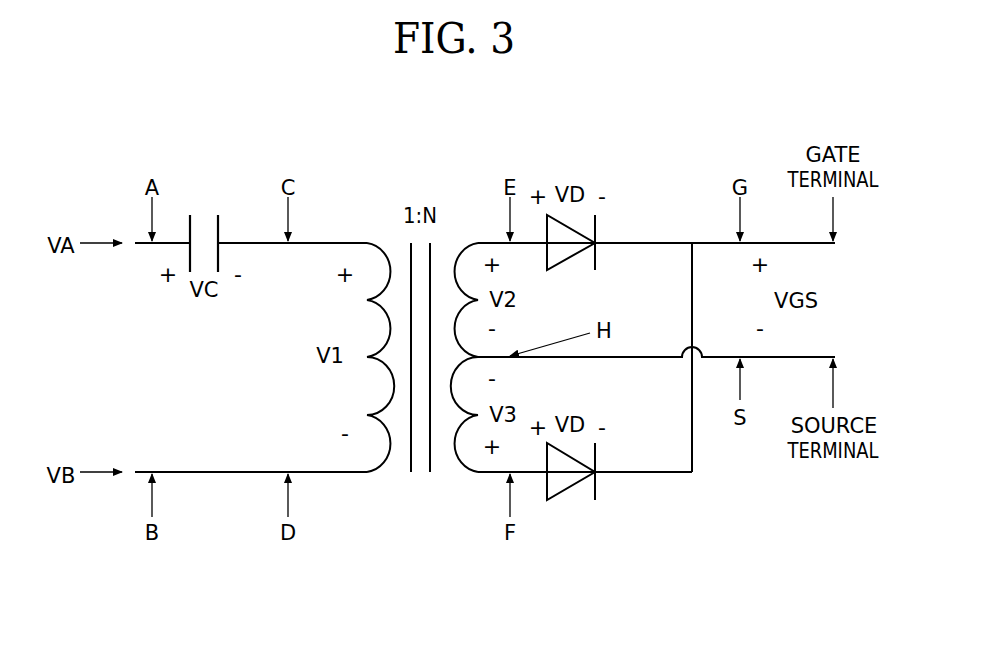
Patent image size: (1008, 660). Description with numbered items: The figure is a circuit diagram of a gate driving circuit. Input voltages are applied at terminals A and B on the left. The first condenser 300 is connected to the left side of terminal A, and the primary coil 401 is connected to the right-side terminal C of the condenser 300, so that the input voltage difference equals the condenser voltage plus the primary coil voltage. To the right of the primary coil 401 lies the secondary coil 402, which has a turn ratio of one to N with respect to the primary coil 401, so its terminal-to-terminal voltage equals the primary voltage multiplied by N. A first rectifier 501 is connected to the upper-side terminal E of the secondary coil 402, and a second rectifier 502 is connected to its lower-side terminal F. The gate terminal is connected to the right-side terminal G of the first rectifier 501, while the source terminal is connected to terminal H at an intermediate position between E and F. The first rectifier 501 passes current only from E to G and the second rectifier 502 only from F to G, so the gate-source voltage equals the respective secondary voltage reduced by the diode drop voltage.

The first condenser 300 is at (218, 197).
The primary coil 401 is at (364, 488).
The secondary coil 402 is at (476, 488).
The first rectifier 501 is at (682, 122).
The second rectifier 502 is at (682, 560).